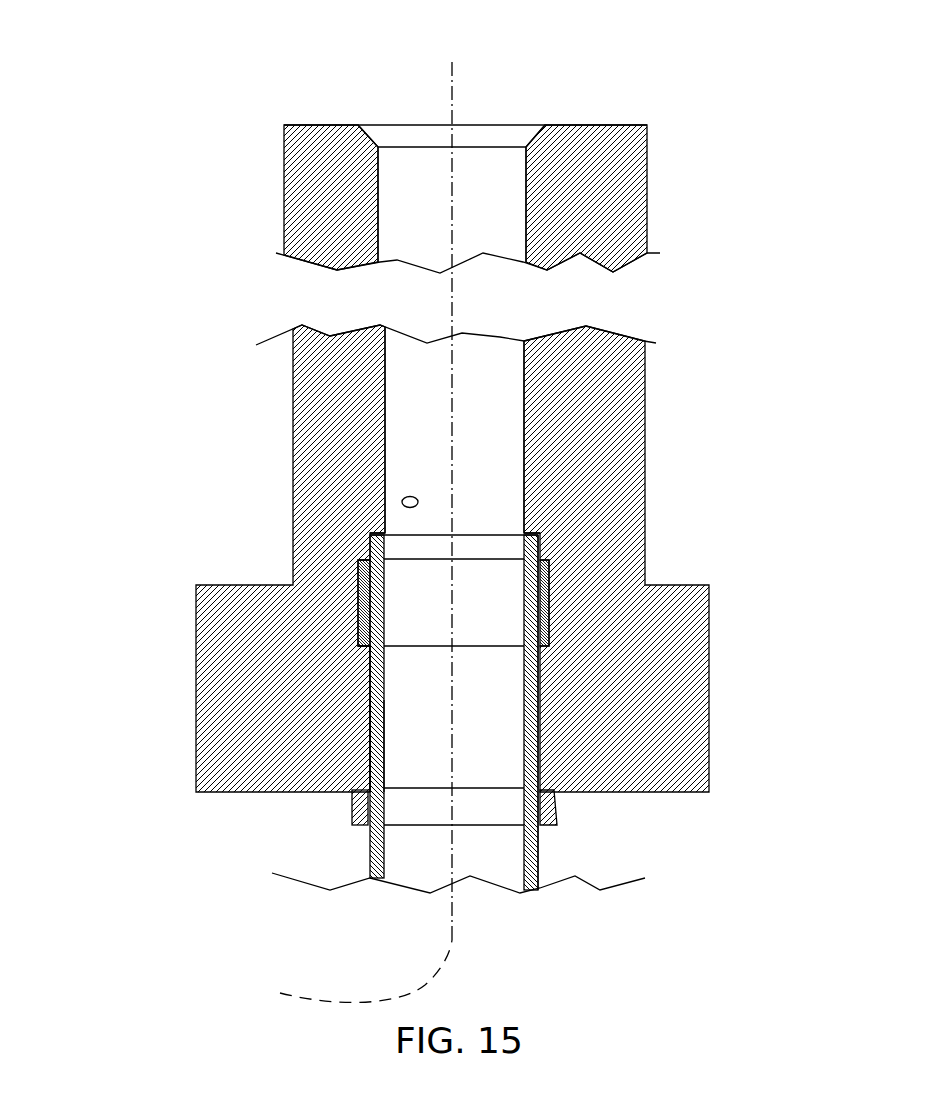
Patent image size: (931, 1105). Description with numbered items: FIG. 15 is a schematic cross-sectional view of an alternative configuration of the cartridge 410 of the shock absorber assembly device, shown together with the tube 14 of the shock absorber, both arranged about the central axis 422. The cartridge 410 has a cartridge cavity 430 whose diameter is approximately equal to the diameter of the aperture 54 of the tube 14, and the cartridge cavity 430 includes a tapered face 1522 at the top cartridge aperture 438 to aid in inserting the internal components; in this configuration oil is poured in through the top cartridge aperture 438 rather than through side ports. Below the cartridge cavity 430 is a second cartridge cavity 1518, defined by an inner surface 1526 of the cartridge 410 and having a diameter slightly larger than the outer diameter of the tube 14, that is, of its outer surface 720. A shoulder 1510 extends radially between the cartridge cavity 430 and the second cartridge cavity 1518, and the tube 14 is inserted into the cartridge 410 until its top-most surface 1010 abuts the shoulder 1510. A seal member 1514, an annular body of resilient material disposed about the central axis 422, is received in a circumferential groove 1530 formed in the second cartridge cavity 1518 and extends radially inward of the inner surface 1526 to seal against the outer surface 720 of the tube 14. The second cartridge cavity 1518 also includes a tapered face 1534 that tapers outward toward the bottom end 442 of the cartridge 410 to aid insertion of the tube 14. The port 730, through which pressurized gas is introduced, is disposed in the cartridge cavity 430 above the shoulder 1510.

The cartridge 410 is at (657, 108).
The top cartridge aperture 438 is at (539, 127).
The tapered face 1522 is at (389, 127).
The cartridge cavity 430 is at (510, 208).
The shoulder 1510 is at (376, 532).
The port 730 is at (408, 496).
The aperture 54 is at (526, 533).
The top-most surface 1010 is at (529, 532).
The tube 14 is at (498, 867).
The outer surface 720 is at (538, 858).
The inner surface 1526 is at (370, 683).
The second cartridge cavity 1518 is at (370, 720).
The circumferential groove 1530 is at (357, 617).
The seal member 1514 is at (358, 582).
The tapered face 1534 is at (366, 812).
The bottom end 442 is at (551, 826).
The central axis 422 is at (344, 971).